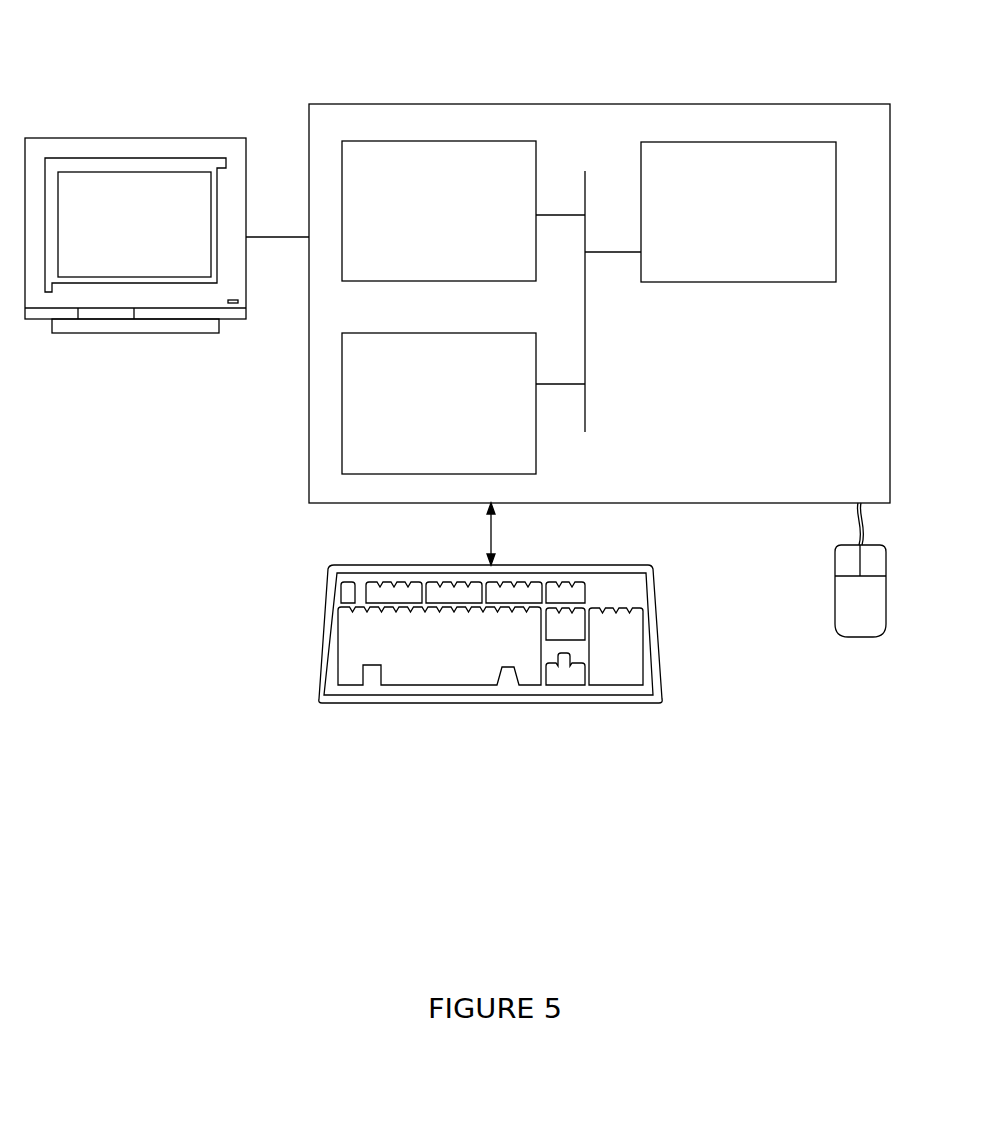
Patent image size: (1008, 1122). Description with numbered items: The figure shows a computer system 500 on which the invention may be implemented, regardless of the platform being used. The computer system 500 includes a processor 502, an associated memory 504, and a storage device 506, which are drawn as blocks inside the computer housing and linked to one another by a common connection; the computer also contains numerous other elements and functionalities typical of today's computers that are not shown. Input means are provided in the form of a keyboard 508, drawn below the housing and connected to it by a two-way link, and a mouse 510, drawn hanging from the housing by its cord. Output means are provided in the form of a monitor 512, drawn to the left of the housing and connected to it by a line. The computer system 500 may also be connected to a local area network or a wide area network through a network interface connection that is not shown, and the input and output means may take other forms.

The computer system 500 is at (634, 59).
The processor 502 is at (709, 222).
The memory 504 is at (422, 221).
The storage device 506 is at (419, 415).
The keyboard 508 is at (418, 656).
The mouse 510 is at (842, 611).
The monitor 512 is at (114, 239).